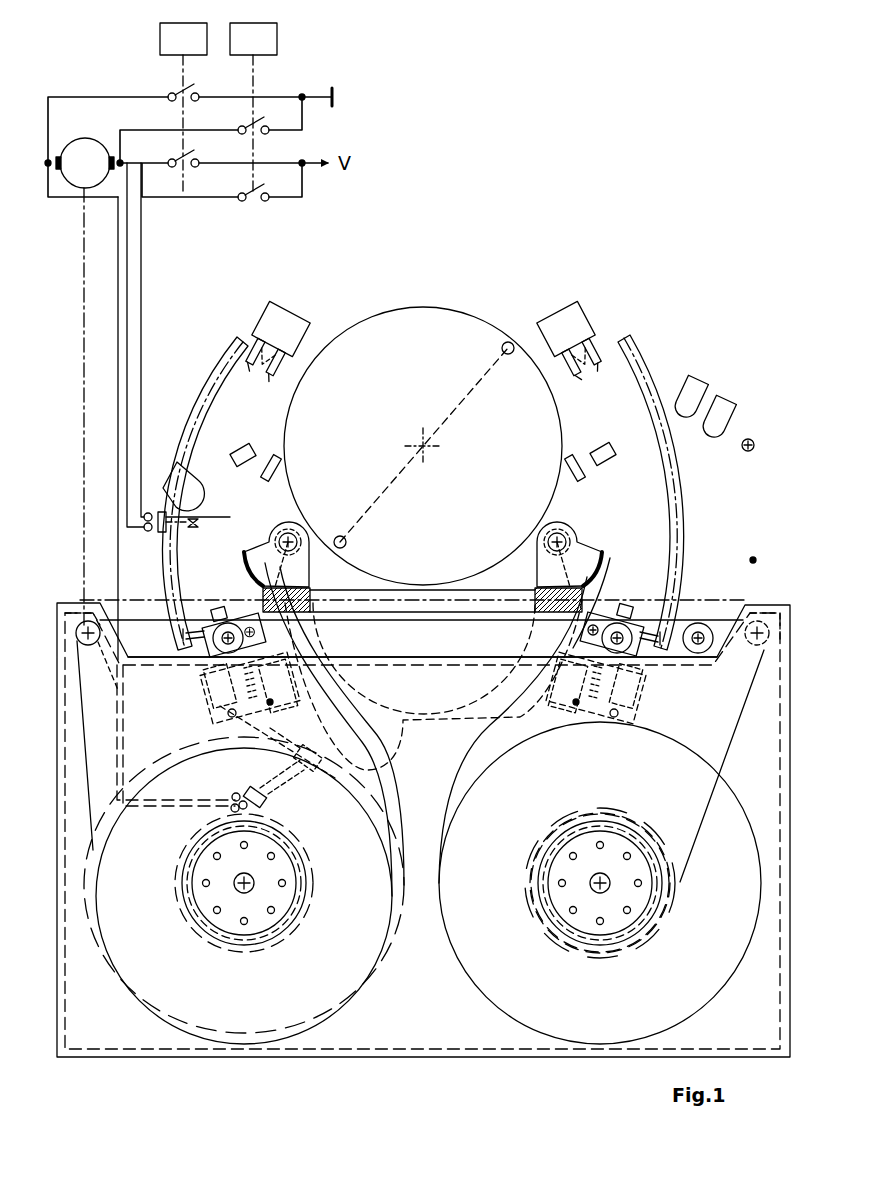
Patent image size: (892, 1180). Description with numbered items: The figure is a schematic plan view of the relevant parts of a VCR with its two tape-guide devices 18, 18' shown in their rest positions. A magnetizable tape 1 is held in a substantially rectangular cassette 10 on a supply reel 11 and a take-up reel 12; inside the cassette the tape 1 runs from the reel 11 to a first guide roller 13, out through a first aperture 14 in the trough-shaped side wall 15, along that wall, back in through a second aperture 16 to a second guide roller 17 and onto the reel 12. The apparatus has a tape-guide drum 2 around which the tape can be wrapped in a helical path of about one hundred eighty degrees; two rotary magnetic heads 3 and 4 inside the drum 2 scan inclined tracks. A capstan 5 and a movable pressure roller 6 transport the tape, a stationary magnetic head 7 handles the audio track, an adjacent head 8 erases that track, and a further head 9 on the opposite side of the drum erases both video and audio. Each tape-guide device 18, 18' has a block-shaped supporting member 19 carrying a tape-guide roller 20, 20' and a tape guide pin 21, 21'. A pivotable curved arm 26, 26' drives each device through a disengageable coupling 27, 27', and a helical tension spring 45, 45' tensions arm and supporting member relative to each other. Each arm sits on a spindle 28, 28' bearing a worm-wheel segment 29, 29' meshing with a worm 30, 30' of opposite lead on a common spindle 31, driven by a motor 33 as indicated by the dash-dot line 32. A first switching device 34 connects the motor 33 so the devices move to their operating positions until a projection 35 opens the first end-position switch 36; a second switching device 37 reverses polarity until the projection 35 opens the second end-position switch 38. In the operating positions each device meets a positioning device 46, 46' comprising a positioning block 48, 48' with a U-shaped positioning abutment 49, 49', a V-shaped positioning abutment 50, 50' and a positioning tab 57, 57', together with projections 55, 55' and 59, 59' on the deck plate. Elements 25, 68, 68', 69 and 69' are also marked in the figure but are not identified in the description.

The magnetizable record carrier 1 is at (140, 620).
The tape-guide drum 2 is at (411, 305).
The rotary magnetic head 3 is at (347, 543).
The rotary magnetic head 4 is at (502, 349).
The capstan 5 is at (752, 439).
The pressure roller 6 is at (701, 622).
The stationary magnetic head 7 is at (720, 400).
The second stationary magnetic head 8 is at (694, 385).
The further stationary magnetic head 9 is at (190, 480).
The cassette 10 is at (358, 1061).
The first reel 11 is at (395, 945).
The second reel 12 is at (461, 950).
The first guide roller 13 is at (90, 645).
The first aperture 14 is at (76, 606).
The trough-shaped side wall 15 is at (377, 656).
The second aperture 16 is at (765, 608).
The second guide roller 17 is at (752, 644).
The tape-guide device 18 is at (620, 601).
The tape-guide device 18' is at (224, 603).
The supporting member 19 is at (245, 558).
The tape-guide roller 20 is at (638, 656).
The tape-guide roller 20' is at (200, 656).
The tape guide pin 21 is at (621, 597).
The tape guide pin 21' is at (221, 599).
The pivot point 25 is at (754, 556).
The pivotable curved arm 26 is at (450, 730).
The pivotable curved arm 26' is at (423, 729).
The disengageable coupling 27 is at (616, 690).
The disengageable coupling 27' is at (226, 691).
The spindle 28 is at (283, 520).
The spindle 28' is at (563, 520).
The worm-wheel segment 29 is at (274, 550).
The worm-wheel segment 29' is at (574, 547).
The worm 30 is at (301, 585).
The worm 30' is at (542, 585).
The spindle 31 is at (420, 607).
The dash-dot line 32 is at (82, 462).
The motor 33 is at (85, 140).
The first switching device 34 is at (148, 52).
The projection 35 is at (307, 750).
The first end-position switch 36 is at (196, 512).
The second switching device 37 is at (270, 52).
The second end-position switch 38 is at (265, 800).
The spring 45 is at (603, 688).
The spring 45' is at (237, 688).
The positioning device 46 is at (570, 335).
The positioning device 46' is at (288, 338).
The positioning block 48 is at (566, 328).
The positioning block 48' is at (304, 313).
The U-shaped positioning abutment 49 is at (571, 362).
The U-shaped positioning abutment 49' is at (275, 362).
The V-shaped further positioning abutment 50 is at (591, 351).
The V-shaped further positioning abutment 50' is at (255, 351).
The projection 55 is at (575, 451).
The projection 55' is at (267, 453).
The positioning tab 57 is at (583, 363).
The positioning tab 57' is at (262, 363).
The projection 59 is at (617, 443).
The projection 59' is at (234, 439).
The guide band 68 is at (651, 487).
The guide band 68' is at (203, 493).
The band centerline 69 is at (672, 493).
The band centerline 69' is at (206, 482).